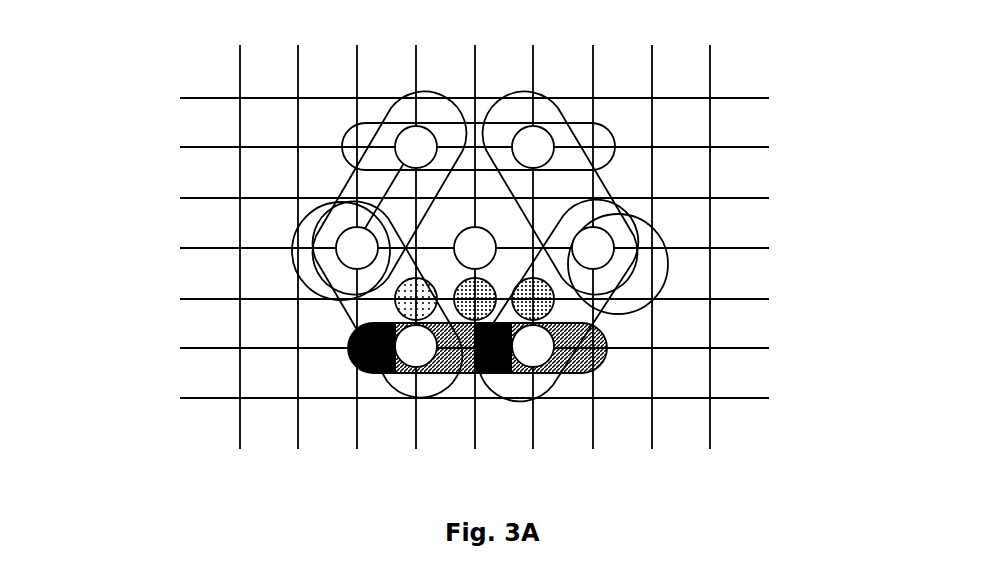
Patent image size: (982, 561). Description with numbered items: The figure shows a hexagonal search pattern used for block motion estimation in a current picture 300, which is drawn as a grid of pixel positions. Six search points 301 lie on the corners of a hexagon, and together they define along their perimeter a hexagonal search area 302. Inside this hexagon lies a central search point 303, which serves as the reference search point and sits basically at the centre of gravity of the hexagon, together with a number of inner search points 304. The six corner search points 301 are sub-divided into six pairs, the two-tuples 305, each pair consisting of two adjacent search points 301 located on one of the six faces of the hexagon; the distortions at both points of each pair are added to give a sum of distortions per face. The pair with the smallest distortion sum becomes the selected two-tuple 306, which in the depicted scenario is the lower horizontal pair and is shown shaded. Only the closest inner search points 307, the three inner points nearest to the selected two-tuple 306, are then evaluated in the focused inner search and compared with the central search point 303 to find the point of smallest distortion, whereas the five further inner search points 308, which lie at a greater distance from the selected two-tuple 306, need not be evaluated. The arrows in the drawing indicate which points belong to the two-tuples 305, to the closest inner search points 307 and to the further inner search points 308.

The current picture 300 is at (105, 100).
The search points 301 is at (475, 246).
The hexagonal search area 302 is at (378, 190).
The central search point 303 is at (475, 248).
The inner search points 304 is at (855, 161).
The 2-tuples 305 is at (487, 86).
The selected 2-tuple 306 is at (350, 355).
The closest inner search points 307 is at (412, 292).
The further inner search points 308 is at (408, 252).